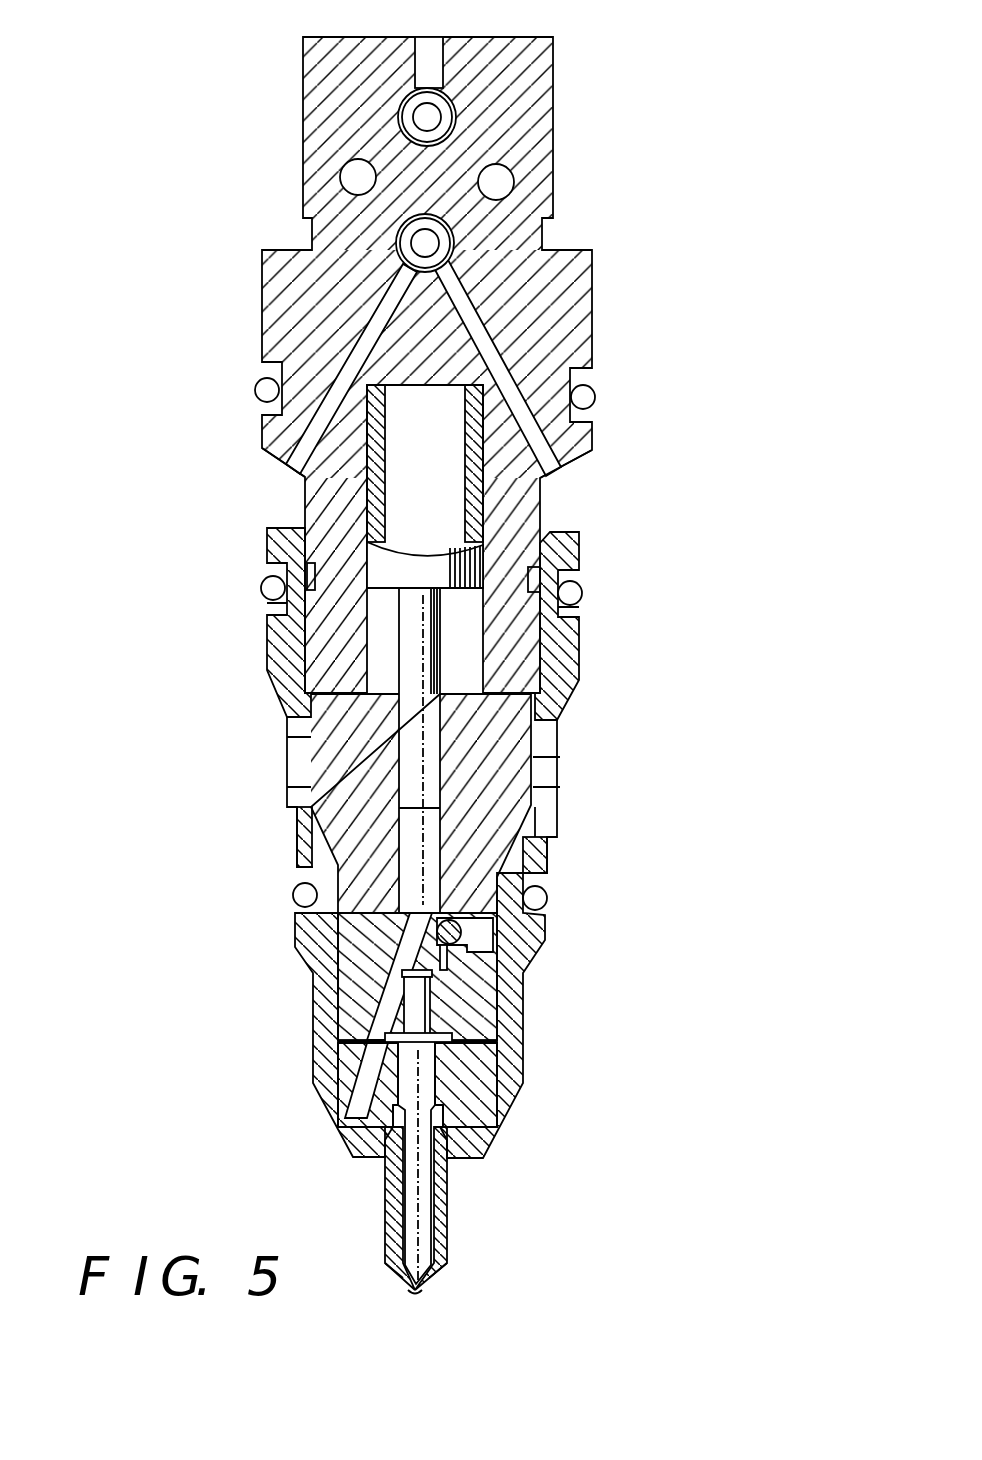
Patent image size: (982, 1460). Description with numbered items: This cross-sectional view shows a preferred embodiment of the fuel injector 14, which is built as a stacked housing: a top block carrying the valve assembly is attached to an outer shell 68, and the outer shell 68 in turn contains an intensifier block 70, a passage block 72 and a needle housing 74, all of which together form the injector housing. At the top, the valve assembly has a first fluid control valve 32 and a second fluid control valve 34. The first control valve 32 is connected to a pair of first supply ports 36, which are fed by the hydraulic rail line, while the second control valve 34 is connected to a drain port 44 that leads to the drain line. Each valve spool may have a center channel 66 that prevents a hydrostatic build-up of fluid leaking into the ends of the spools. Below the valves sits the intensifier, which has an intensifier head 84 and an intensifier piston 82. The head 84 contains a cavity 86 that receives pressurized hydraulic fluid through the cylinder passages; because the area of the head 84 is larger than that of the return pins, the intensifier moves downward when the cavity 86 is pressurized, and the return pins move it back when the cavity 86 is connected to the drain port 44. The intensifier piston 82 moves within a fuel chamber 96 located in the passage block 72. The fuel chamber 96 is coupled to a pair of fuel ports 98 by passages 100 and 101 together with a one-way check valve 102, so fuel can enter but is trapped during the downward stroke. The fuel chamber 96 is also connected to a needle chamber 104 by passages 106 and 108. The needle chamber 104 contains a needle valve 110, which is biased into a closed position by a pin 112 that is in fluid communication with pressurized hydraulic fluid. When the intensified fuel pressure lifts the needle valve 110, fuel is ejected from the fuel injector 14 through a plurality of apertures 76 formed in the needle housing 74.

The fuel injector 14 is at (458, 660).
The first fluid control valve 32 is at (458, 238).
The second fluid control valve 34 is at (462, 123).
The first supply ports 36 is at (546, 476).
The drain port 44 is at (428, 42).
The center channel 66 is at (423, 117).
The outer shell 68 is at (277, 657).
The intensifier block 70 is at (343, 808).
The passage block 72 is at (345, 995).
The needle housing 74 is at (472, 1082).
The apertures 76 is at (417, 1290).
The intensifier piston 82 is at (432, 638).
The intensifier head 84 is at (377, 565).
The cavity 86 is at (425, 463).
The fuel chamber 96 is at (433, 866).
The fuel ports 98 is at (293, 757).
The passage 100 is at (545, 846).
The passage 101 is at (465, 962).
The one-way check valve 102 is at (462, 932).
The needle chamber 104 is at (395, 1122).
The passage 106 is at (383, 970).
The passage 108 is at (372, 1070).
The needle valve 110 is at (420, 1192).
The pin 112 is at (420, 1000).